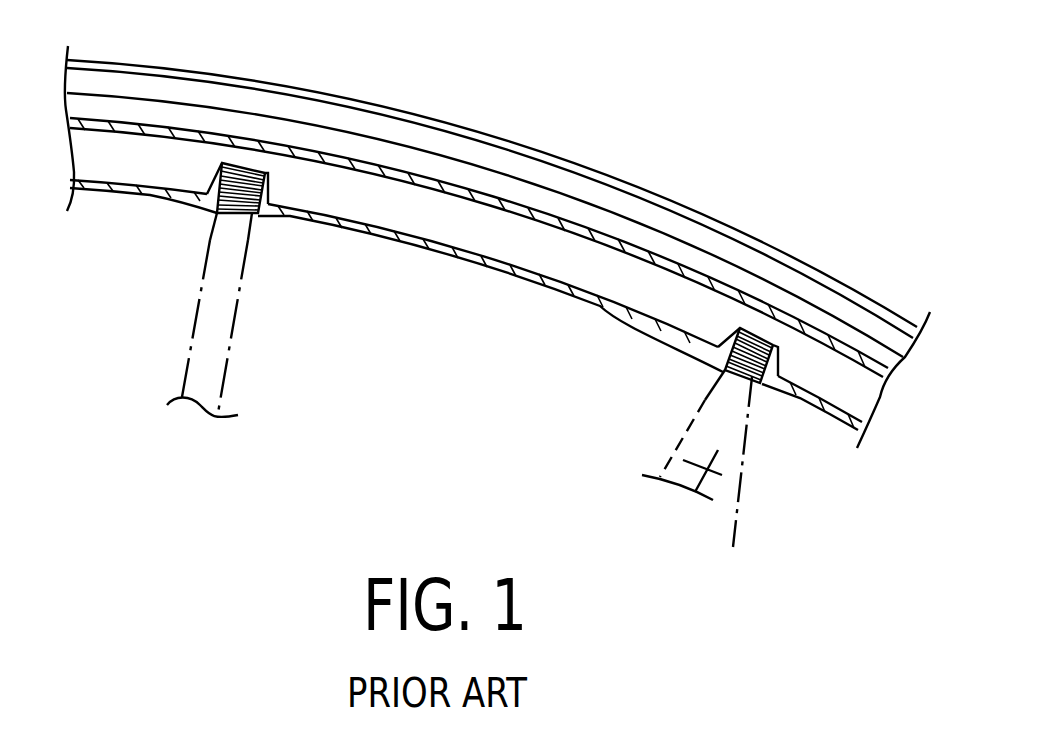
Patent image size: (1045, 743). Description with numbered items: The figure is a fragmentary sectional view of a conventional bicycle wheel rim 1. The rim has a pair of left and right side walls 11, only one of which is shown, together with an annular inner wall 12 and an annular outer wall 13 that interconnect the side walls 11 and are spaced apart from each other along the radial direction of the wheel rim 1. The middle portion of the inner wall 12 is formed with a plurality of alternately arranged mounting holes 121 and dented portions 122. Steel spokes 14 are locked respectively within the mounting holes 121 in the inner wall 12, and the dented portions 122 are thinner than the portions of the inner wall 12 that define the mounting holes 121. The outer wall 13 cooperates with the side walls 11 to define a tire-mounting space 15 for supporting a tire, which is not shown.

The bicycle wheel rim 1 is at (757, 137).
The side wall 11 is at (557, 253).
The inner wall 12 is at (599, 328).
The outer wall 13 is at (462, 192).
The steel spoke 14 is at (207, 352).
The tire-mounting space 15 is at (385, 152).
The mounting hole 121 is at (233, 177).
The dented portion 122 is at (521, 278).